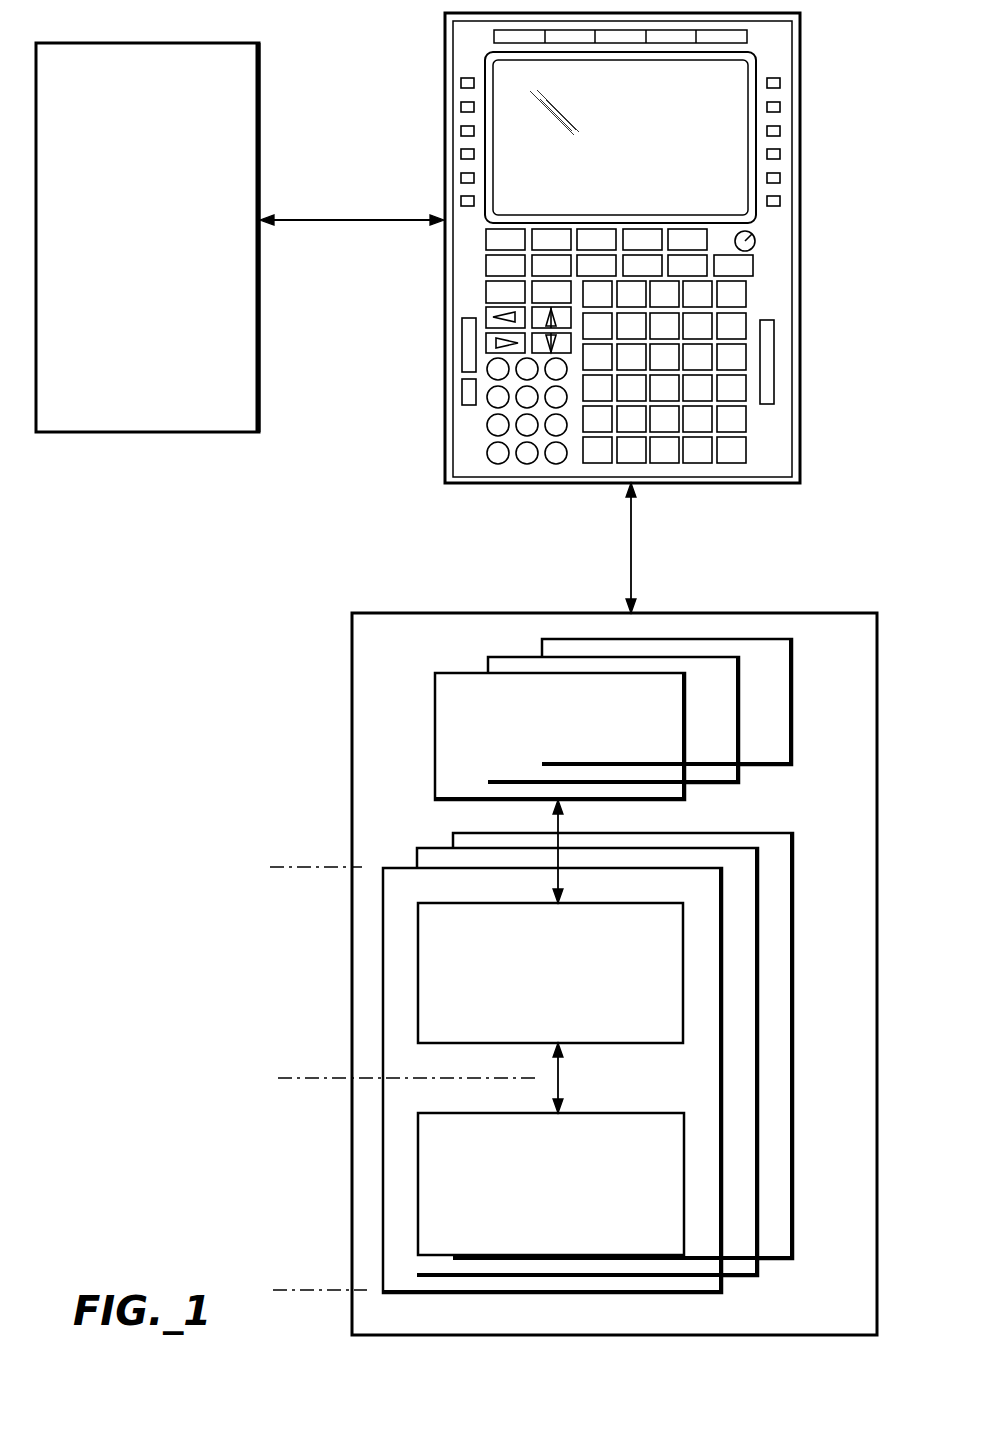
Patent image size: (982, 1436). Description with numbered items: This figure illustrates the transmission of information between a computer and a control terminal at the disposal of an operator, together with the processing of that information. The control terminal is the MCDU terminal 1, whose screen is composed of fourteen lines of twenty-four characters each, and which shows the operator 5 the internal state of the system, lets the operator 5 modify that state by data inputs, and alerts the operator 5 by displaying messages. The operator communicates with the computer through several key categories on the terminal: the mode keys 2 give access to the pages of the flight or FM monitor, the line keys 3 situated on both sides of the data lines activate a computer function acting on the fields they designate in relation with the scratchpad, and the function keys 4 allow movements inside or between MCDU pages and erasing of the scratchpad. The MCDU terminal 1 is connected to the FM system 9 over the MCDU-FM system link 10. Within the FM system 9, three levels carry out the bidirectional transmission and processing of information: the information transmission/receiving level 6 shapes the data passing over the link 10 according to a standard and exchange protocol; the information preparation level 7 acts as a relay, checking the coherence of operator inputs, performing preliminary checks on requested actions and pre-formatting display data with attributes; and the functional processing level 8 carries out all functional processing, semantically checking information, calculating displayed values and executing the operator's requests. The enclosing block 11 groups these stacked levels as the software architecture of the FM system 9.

The MCDU terminal 1 is at (632, 275).
The mode keys 2 is at (808, 232).
The line keys 3 is at (808, 81).
The function keys 4 is at (435, 303).
The operator 5 is at (150, 43).
The information transmission/receiving level 6 is at (310, 613).
The information preparation level 7 is at (310, 871).
The functional processing level 8 is at (310, 1080).
The FM system 9 is at (802, 1268).
The MCDU-FM system link 10 is at (631, 553).
The terminal software architecture 11 is at (398, 606).